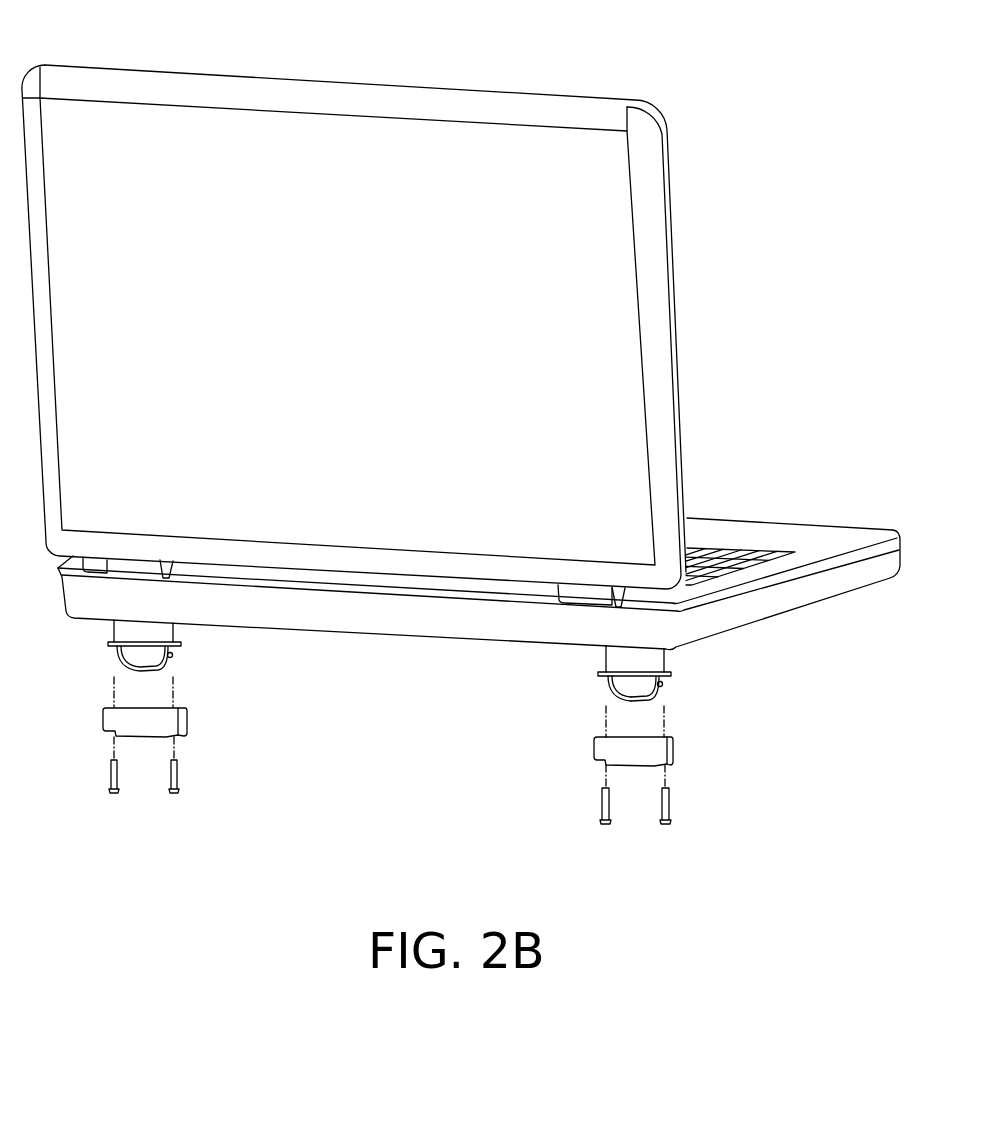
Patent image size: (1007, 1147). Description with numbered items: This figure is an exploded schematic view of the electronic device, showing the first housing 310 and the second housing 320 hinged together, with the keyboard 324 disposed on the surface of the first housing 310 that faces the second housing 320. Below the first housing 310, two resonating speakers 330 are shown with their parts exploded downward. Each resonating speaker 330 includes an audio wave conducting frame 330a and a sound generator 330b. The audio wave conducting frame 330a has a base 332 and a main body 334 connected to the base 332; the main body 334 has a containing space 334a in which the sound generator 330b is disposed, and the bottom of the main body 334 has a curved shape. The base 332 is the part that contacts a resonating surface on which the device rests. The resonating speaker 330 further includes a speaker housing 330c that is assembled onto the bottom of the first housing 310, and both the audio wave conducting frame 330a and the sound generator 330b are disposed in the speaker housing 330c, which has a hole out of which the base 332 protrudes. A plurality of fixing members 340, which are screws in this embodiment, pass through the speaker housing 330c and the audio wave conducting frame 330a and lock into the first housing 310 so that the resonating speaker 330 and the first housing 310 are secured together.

The first housing 310 is at (479, 543).
The second housing 320 is at (545, 112).
The keyboard 324 is at (722, 554).
The resonating speaker 330 is at (477, 706).
The audio wave conducting frame 330a is at (661, 695).
The sound generator 330b is at (608, 680).
The speaker housing 330c is at (672, 755).
The base 332 is at (631, 709).
The main body 334 is at (667, 673).
The containing space 334a is at (620, 690).
The fixing members 340 is at (668, 803).